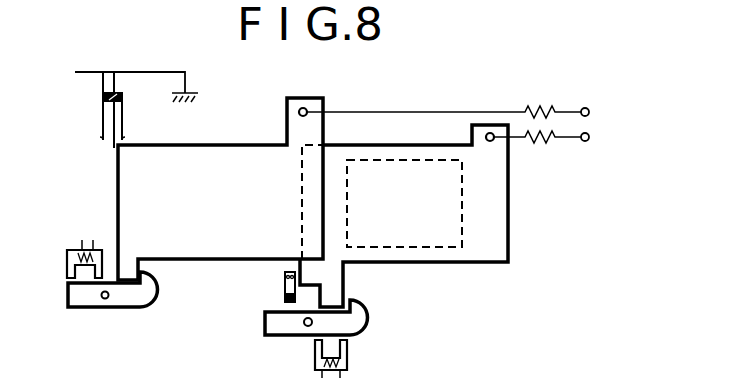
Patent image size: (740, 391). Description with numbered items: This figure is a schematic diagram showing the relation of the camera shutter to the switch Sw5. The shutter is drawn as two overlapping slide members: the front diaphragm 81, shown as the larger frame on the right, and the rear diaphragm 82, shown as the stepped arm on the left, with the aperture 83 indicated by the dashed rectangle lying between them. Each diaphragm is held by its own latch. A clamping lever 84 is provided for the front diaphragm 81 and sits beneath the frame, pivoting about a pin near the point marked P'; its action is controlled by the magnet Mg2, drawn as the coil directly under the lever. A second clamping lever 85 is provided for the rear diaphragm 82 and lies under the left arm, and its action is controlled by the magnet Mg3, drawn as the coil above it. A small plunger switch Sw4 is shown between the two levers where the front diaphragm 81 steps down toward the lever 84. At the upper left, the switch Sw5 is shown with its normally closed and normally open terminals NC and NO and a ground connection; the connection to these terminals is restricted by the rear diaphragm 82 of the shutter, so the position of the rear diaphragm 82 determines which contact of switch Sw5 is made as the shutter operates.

The front diaphragm 81 is at (482, 252).
The rear diaphragm 82 is at (208, 243).
The aperture 83 is at (413, 238).
The clamping lever 84 is at (363, 315).
The clamping lever 85 is at (105, 300).
The switch Sw4 is at (285, 287).
The switch Sw5 is at (123, 108).
The magnet Mg2 is at (348, 352).
The magnet Mg3 is at (84, 243).
The pin P' is at (280, 352).